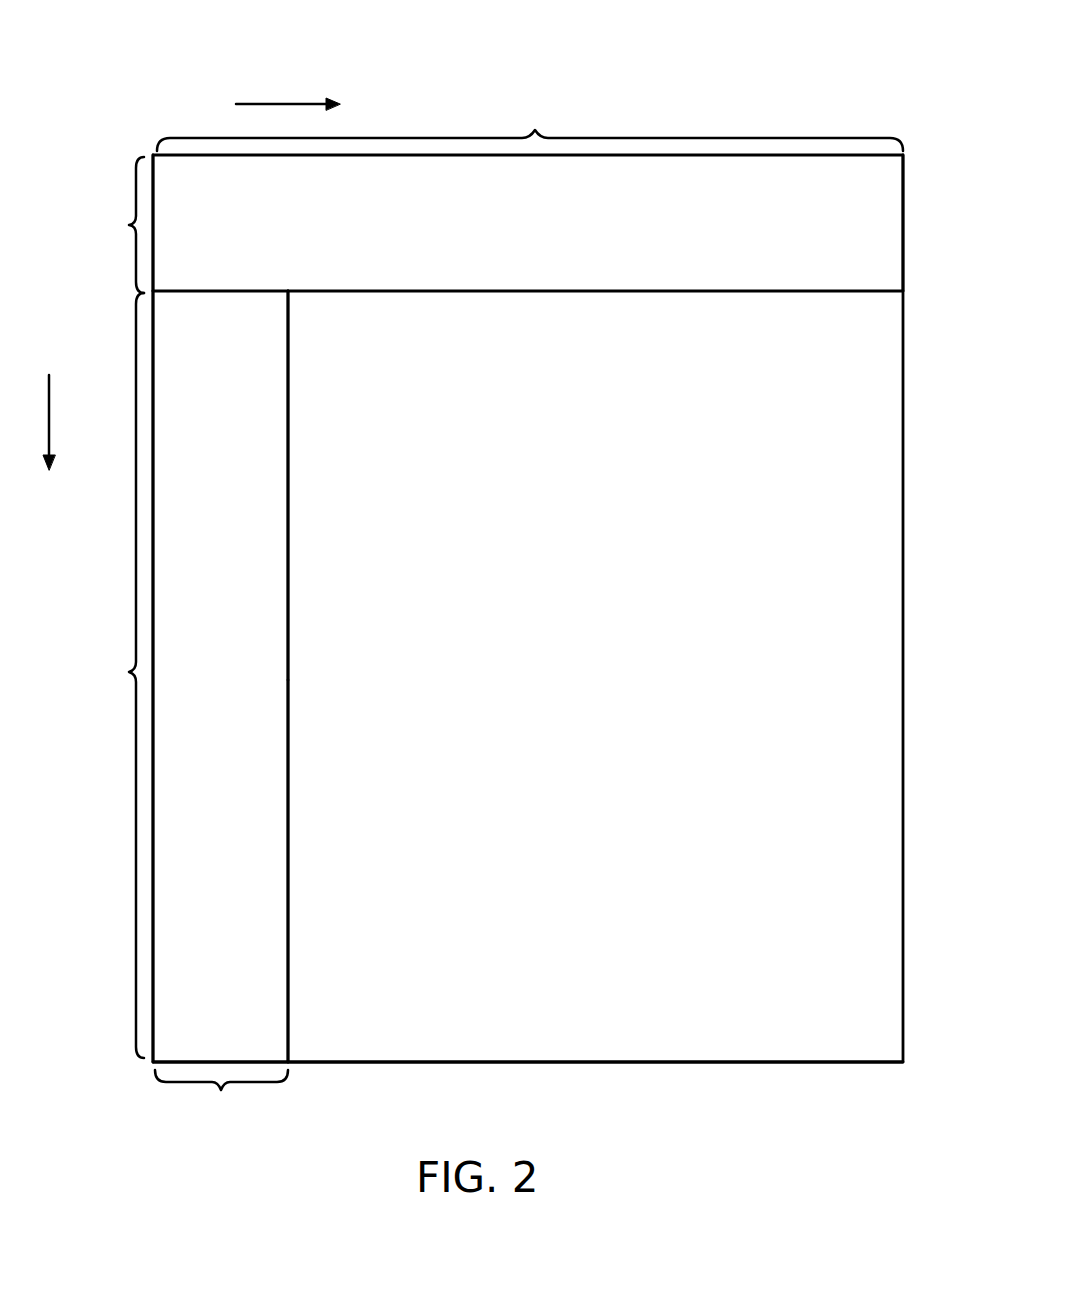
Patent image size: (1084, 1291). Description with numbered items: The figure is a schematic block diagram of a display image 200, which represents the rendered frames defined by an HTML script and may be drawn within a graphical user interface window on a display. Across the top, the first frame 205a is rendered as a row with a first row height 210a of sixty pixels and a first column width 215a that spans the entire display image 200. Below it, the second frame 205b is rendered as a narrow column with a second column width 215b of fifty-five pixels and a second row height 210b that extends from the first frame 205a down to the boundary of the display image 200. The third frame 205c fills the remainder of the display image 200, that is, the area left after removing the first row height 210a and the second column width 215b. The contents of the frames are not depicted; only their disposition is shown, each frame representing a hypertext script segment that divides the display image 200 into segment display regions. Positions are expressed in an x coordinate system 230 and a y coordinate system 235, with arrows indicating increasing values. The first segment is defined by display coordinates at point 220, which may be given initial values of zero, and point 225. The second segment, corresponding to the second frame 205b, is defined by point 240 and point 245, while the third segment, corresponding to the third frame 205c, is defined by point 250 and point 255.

The display image 200 is at (152, 66).
The Frame 1 205a is at (528, 244).
The Frame 2 205b is at (234, 676).
The Frame 3 205c is at (595, 676).
The first row height 210a is at (129, 226).
The second row height 210b is at (129, 673).
The first column width 215a is at (535, 131).
The second column width 215b is at (221, 1091).
The point 220 is at (153, 153).
The point 225 is at (903, 290).
The x coordinate system 230 is at (290, 102).
The y coordinate system 235 is at (49, 397).
The point 240 is at (154, 293).
The point 245 is at (289, 1057).
The point 250 is at (289, 293).
The point 255 is at (903, 1063).